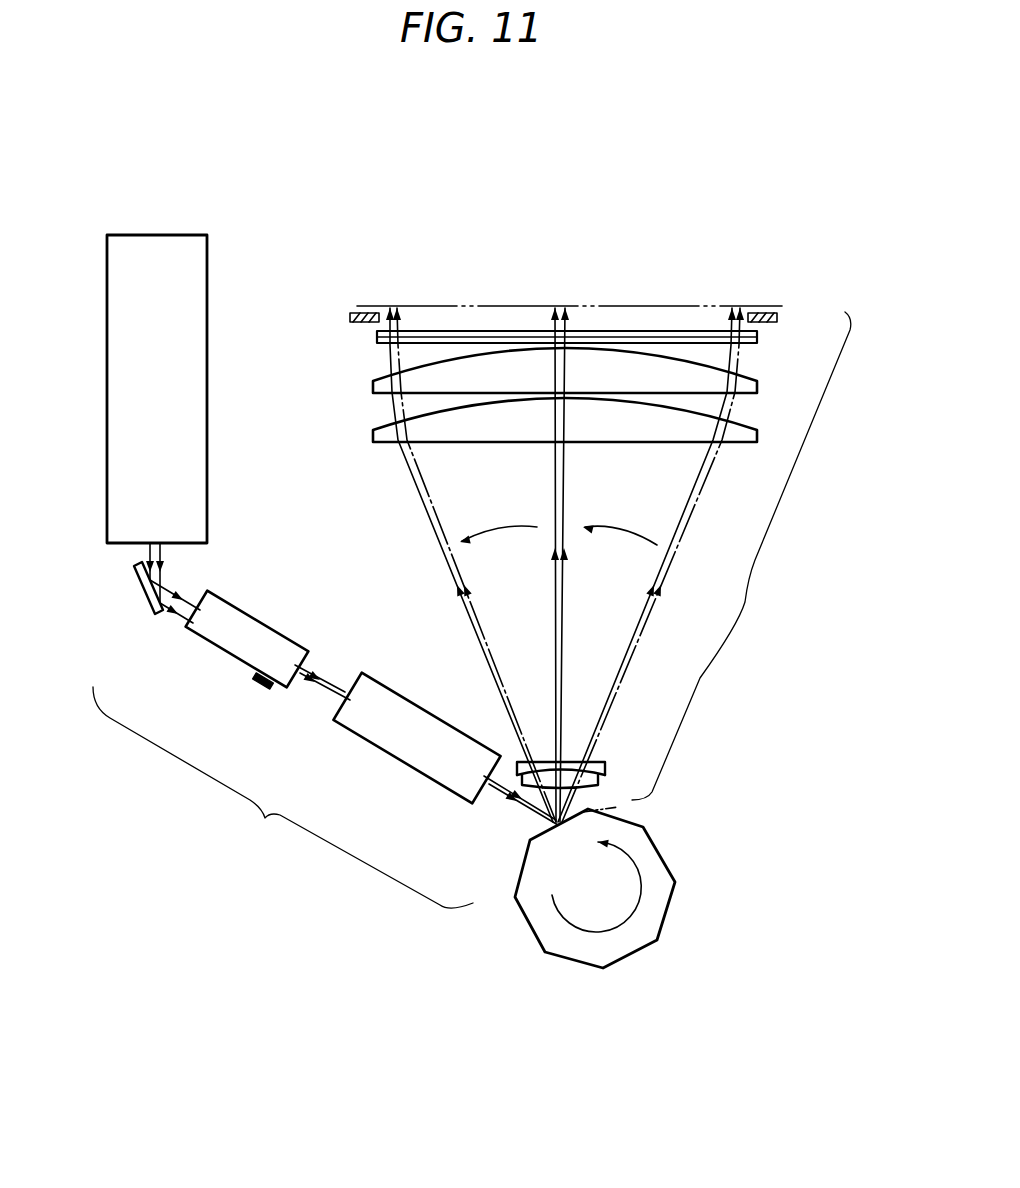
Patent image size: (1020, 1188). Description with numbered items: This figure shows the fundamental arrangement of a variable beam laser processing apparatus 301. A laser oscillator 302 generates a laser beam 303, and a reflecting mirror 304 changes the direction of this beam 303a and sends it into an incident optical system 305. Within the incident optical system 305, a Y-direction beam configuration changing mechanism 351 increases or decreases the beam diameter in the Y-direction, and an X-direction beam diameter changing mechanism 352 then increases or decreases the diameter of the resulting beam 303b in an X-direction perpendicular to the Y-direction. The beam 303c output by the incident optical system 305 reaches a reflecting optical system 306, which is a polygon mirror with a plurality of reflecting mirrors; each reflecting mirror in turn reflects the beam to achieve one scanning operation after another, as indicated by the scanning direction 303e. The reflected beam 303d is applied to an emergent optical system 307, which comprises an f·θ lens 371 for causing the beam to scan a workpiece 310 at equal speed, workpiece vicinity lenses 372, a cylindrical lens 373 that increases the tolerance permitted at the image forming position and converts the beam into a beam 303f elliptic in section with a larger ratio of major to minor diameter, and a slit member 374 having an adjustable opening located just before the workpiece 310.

The laser scanning optical system 301 is at (376, 186).
The laser oscillator 302 is at (197, 259).
The laser beam 303 is at (478, 598).
The laser beam 303a is at (165, 557).
The laser beam 303b is at (336, 670).
The laser beam 303c is at (503, 808).
The laser beam 303d is at (618, 807).
The scanning direction of light beam 303e is at (555, 497).
The laser beam 303f is at (566, 330).
The reflecting mirror 304 is at (147, 598).
The incident optical system 305 is at (283, 797).
The reflecting optical system 306 is at (622, 933).
The emergent optical system 307 is at (741, 556).
The workpiece 310 is at (776, 304).
The Y-direction beam configuration changing mechanism 351 is at (223, 638).
The X-direction beam diameter changing mechanism 352 is at (410, 752).
The f·θ lens 371 is at (600, 764).
The workpiece vicinity lenses 372 is at (745, 388).
The cylindrical lens 373 is at (757, 340).
The slit member 374 is at (352, 318).